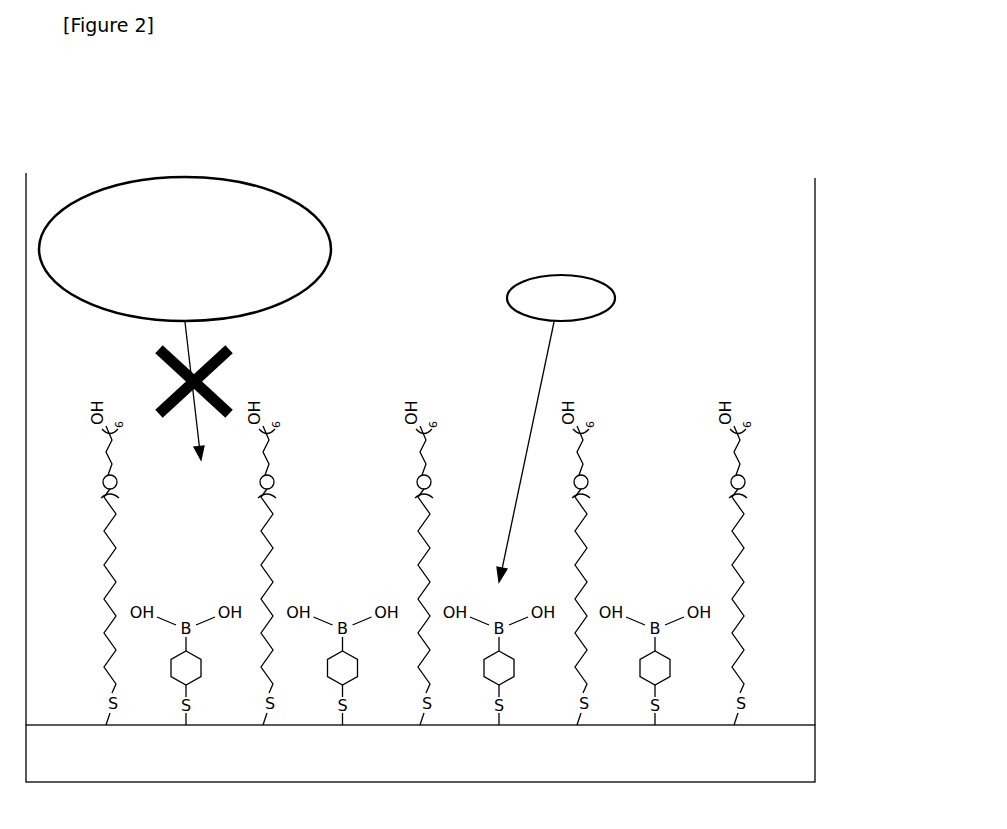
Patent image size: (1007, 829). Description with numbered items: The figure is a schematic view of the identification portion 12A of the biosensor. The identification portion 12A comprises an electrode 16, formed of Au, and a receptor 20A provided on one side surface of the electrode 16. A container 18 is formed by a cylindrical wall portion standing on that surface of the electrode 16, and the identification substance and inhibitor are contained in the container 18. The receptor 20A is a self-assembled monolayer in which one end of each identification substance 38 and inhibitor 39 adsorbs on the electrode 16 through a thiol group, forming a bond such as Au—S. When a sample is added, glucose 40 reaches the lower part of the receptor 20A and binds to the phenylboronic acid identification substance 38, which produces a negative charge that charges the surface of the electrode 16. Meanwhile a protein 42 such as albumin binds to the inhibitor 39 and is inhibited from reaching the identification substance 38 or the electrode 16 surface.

The identification portion 12A is at (757, 194).
The container 18 is at (815, 263).
The receptor 20A is at (805, 368).
The inhibitor 39 is at (770, 448).
The identification substance 38 is at (653, 582).
The electrode 16 is at (773, 725).
The glucose 40 is at (598, 278).
The protein 42 is at (306, 201).